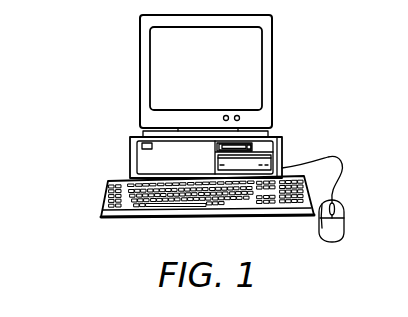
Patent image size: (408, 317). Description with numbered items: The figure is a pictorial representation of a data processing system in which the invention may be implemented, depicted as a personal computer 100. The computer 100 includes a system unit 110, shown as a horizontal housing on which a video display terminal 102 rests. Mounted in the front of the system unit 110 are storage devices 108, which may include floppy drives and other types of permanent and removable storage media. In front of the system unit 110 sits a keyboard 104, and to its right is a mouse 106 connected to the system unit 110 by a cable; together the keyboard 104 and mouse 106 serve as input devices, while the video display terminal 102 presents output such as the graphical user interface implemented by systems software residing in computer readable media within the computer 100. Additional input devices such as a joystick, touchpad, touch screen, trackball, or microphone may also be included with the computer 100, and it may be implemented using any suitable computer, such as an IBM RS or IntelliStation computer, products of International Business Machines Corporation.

The computer 100 is at (91, 75).
The video display terminal 102 is at (273, 71).
The keyboard 104 is at (123, 219).
The mouse 106 is at (332, 242).
The storage devices 108 is at (248, 146).
The system unit 110 is at (130, 156).